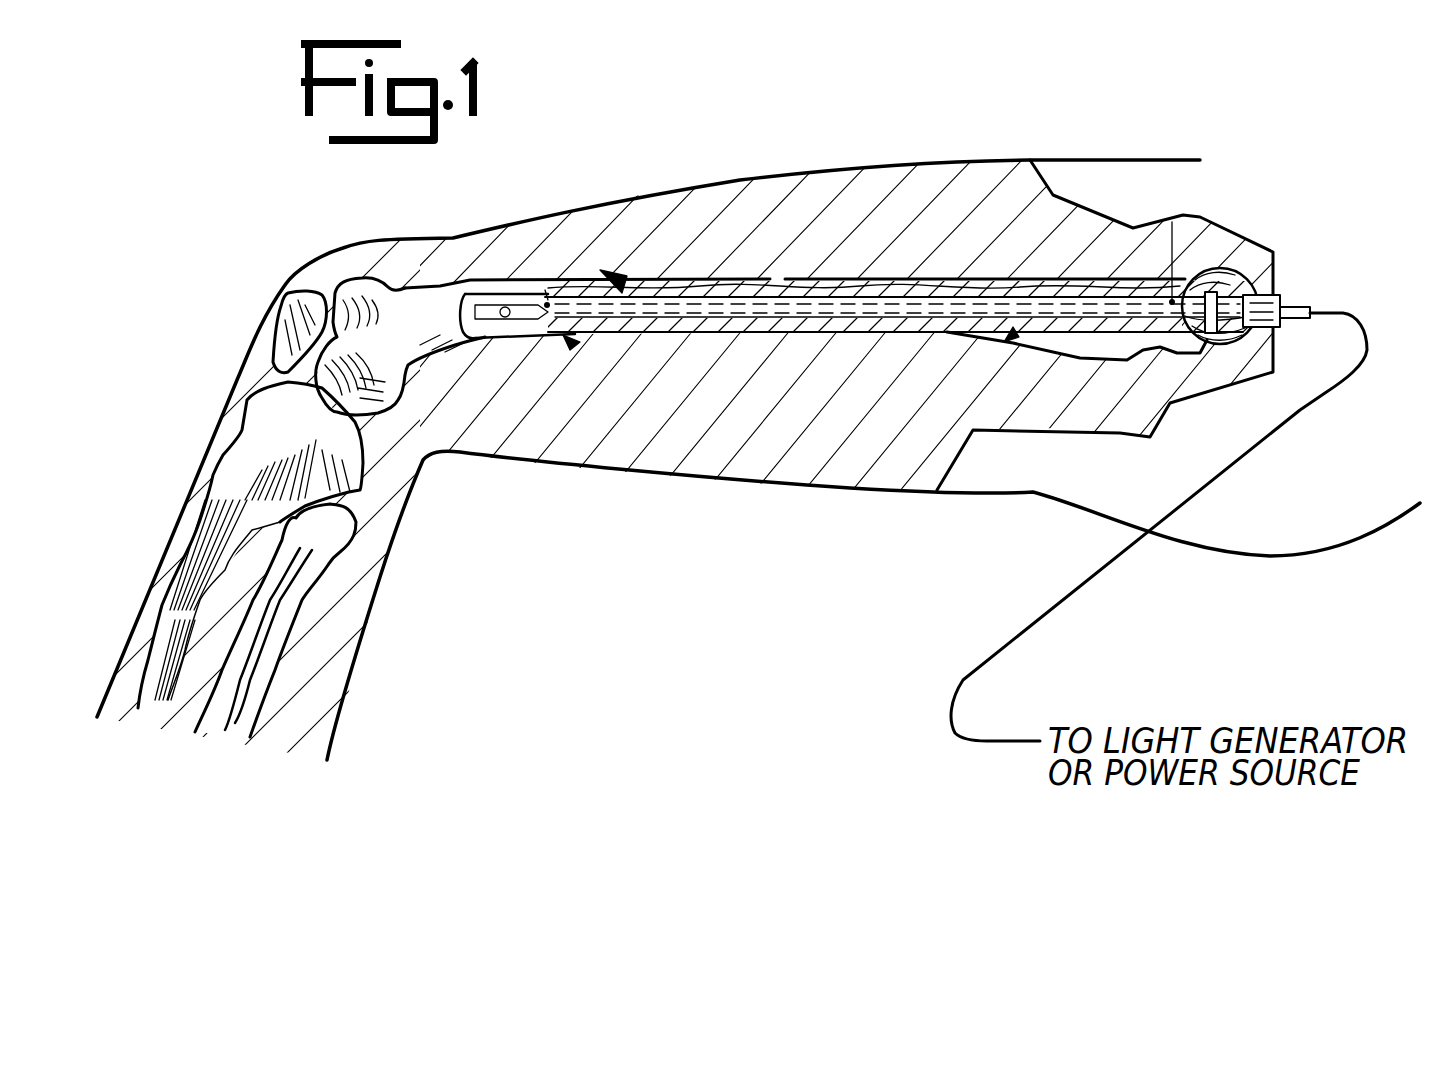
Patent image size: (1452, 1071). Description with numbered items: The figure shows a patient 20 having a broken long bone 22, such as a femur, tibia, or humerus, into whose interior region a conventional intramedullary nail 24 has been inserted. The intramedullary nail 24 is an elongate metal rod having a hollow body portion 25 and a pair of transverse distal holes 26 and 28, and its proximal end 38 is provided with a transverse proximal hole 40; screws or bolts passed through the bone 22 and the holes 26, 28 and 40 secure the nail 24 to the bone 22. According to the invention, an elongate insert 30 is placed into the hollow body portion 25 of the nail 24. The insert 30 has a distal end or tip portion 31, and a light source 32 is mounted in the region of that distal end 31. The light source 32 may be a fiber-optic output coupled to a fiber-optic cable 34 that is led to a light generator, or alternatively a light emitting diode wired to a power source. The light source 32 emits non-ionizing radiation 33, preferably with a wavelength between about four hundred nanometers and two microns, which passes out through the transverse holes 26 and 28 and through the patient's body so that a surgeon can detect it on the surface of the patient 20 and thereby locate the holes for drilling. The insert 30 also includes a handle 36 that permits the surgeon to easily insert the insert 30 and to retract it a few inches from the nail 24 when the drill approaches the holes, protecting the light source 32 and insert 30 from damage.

The patient 20 is at (717, 197).
The long bone 22 is at (365, 312).
The intramedullary nail 24 is at (1013, 327).
The hollow body portion 25 is at (713, 320).
The transverse distal hole 26 is at (546, 310).
The transverse distal hole 28 is at (505, 316).
The insert 30 is at (880, 415).
The distal end 31 is at (620, 277).
The light source 32 is at (552, 302).
The radiation 33 is at (575, 345).
The fiber-optic cable 34 is at (1353, 370).
The handle 36 is at (1285, 295).
The proximal end 38 is at (1235, 245).
The proximal hole 40 is at (1174, 222).